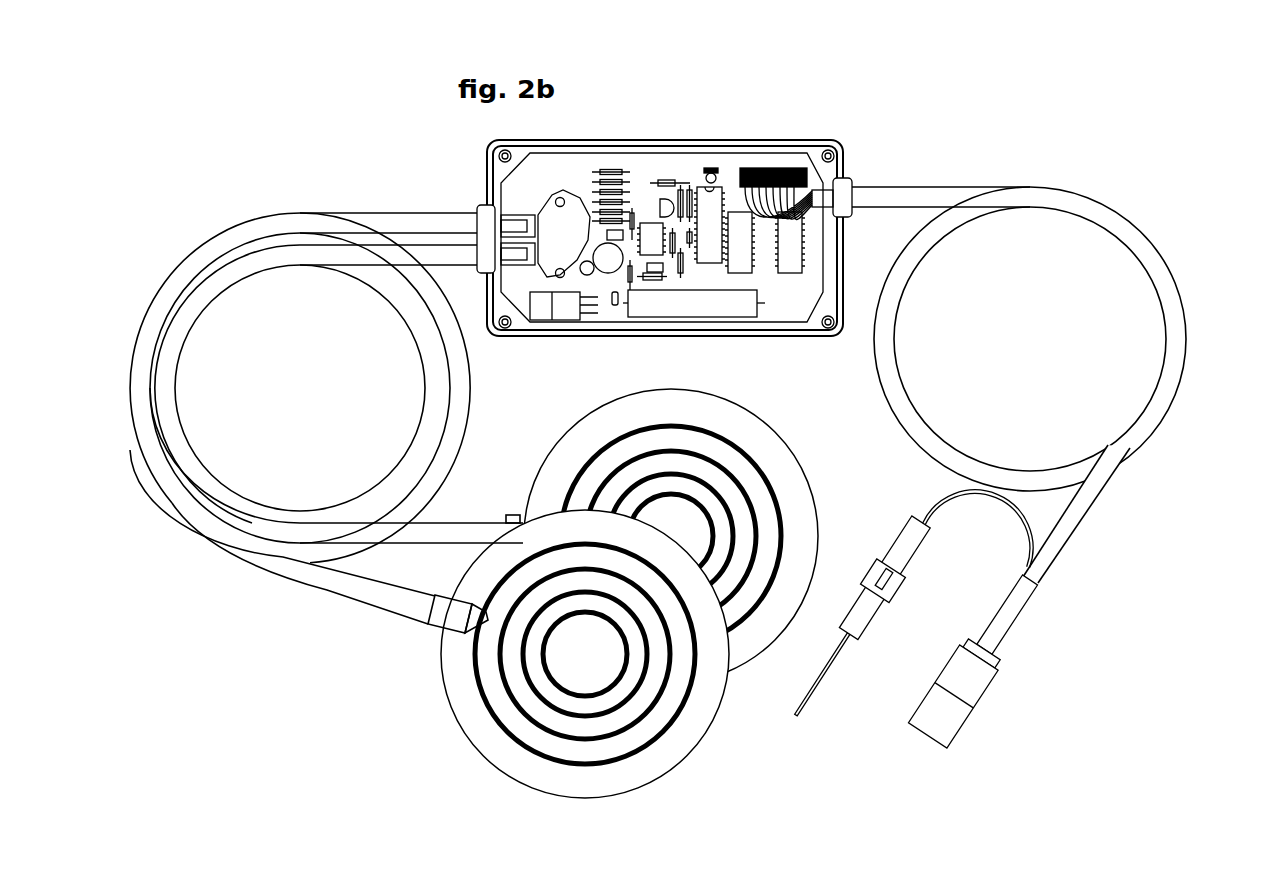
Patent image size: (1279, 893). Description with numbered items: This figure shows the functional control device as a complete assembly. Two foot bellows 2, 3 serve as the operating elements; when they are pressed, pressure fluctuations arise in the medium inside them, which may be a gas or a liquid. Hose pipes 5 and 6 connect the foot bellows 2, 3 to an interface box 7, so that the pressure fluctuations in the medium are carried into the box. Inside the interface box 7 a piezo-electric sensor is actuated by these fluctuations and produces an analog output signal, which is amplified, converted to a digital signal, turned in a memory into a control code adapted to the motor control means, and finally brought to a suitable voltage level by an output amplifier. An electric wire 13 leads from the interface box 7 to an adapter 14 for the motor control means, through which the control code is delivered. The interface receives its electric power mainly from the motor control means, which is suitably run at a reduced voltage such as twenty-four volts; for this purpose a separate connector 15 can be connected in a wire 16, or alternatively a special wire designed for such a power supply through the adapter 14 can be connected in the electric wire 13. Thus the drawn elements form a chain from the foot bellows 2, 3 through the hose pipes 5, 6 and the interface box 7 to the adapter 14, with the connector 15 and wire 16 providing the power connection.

The foot bellows 2 is at (553, 675).
The foot bellows 3 is at (684, 525).
The hose pipe 5 is at (309, 571).
The hose pipe 6 is at (354, 455).
The interface box 7 is at (698, 171).
The electric wire 13 is at (1062, 361).
The adapter 14 is at (1016, 678).
The separate connector 15 is at (900, 671).
The wire 16 is at (1013, 685).